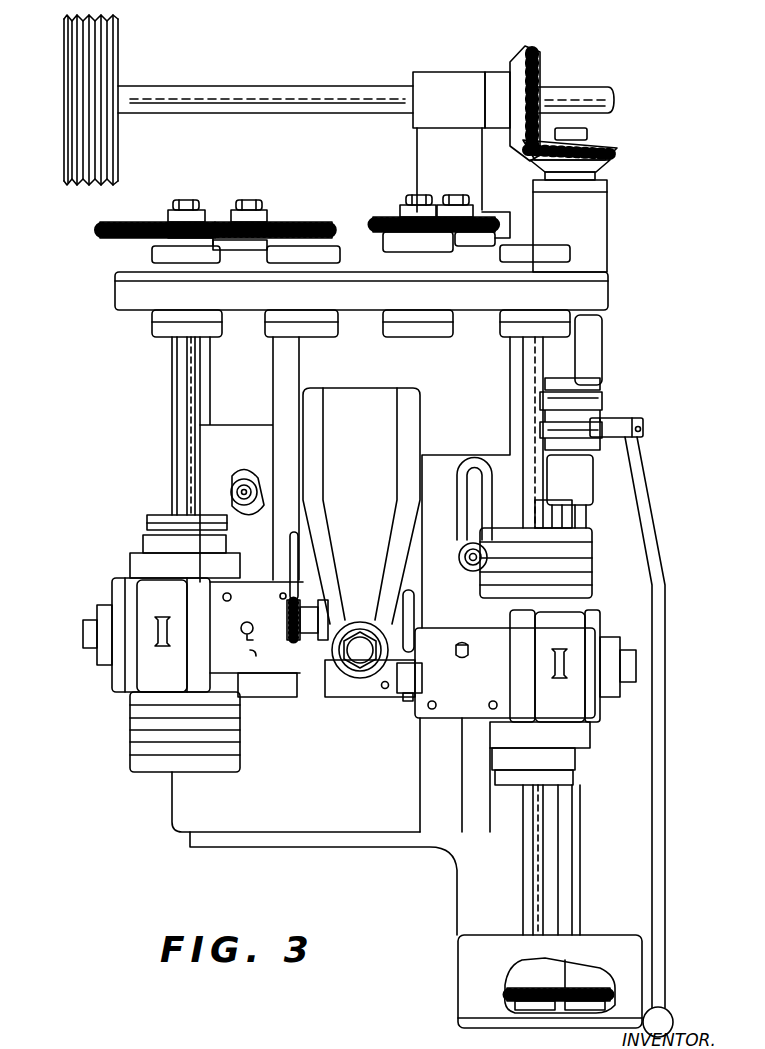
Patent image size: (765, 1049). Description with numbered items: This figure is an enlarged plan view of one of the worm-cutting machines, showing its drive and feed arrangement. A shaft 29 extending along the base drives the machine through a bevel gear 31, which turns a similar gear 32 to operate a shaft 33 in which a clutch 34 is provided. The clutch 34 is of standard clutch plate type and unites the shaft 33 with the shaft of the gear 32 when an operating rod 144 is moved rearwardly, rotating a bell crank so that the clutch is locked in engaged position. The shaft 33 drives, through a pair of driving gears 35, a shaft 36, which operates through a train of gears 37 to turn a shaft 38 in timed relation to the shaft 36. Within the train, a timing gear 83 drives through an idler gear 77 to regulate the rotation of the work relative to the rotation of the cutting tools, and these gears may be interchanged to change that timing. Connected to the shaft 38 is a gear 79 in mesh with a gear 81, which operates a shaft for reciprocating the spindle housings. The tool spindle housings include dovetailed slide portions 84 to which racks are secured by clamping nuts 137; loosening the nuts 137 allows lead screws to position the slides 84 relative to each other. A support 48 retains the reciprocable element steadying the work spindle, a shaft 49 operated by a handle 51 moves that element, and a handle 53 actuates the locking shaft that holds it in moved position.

The shaft 29 is at (378, 72).
The bevel gear 31 is at (540, 70).
The gear 32 is at (607, 152).
The shaft 33 is at (585, 522).
The clutch 34 is at (600, 405).
The driving gears 35 is at (578, 990).
The shaft 36 is at (532, 878).
The train of gears 37 is at (361, 304).
The shaft 38 is at (172, 420).
The support 48 is at (361, 533).
The shaft 49 is at (417, 672).
The handle 51 is at (413, 650).
The handle 53 is at (294, 640).
The idler gear 77 is at (478, 218).
The gear 79 is at (103, 226).
The gear 81 is at (328, 212).
The timing gear 83 is at (392, 205).
The dovetailed slide portion 84 is at (232, 424).
The clamping nuts 137 is at (253, 458).
The operating rod 144 is at (665, 698).